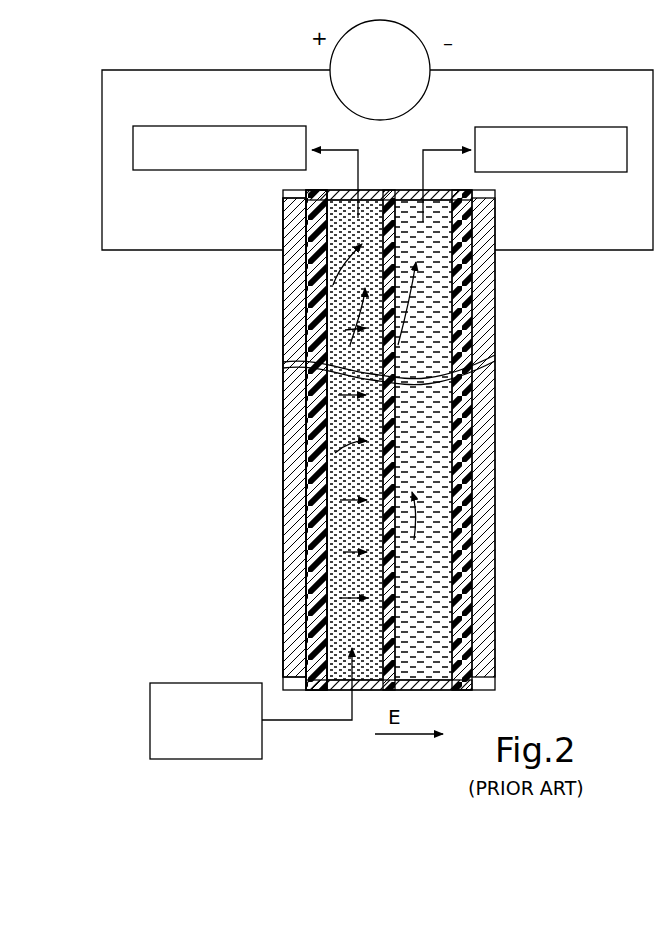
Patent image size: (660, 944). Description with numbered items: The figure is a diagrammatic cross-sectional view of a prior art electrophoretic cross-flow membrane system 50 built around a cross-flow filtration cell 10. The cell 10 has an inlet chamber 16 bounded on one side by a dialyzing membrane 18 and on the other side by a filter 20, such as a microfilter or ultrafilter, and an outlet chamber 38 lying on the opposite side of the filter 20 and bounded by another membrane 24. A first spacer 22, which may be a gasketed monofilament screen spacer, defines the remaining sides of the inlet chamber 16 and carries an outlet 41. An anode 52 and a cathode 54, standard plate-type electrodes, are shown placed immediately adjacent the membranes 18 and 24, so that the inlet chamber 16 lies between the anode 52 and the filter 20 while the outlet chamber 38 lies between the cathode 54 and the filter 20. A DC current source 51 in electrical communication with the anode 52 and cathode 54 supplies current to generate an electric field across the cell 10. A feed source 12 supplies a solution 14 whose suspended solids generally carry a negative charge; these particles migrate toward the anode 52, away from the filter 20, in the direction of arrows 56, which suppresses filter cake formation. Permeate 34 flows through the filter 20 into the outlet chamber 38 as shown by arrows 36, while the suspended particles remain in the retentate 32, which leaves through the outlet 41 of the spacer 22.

The cross-flow filtration cell 10 is at (355, 757).
The feed source 12 is at (160, 710).
The solution 14 is at (328, 725).
The inlet chamber 16 is at (285, 562).
The membrane 18 is at (318, 408).
The filter 20 is at (388, 190).
The first spacer 22 is at (330, 190).
The membrane 24 is at (462, 433).
The retentate 32 is at (283, 126).
The permeate 34 is at (545, 127).
The arrows 36 is at (432, 283).
The outlet chamber 38 is at (422, 608).
The outlet 41 is at (290, 240).
The electrophoretic cross-flow membrane system 50 is at (512, 345).
The DC current source 51 is at (405, 42).
The anode 52 is at (290, 486).
The cathode 54 is at (493, 495).
The arrows 56 is at (312, 292).